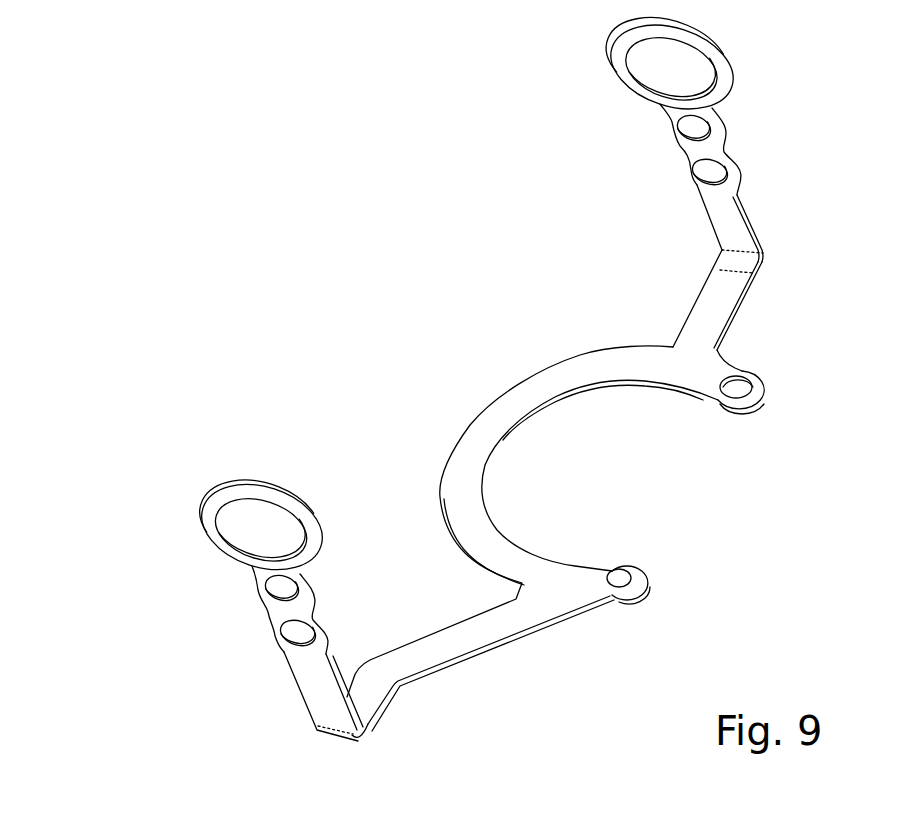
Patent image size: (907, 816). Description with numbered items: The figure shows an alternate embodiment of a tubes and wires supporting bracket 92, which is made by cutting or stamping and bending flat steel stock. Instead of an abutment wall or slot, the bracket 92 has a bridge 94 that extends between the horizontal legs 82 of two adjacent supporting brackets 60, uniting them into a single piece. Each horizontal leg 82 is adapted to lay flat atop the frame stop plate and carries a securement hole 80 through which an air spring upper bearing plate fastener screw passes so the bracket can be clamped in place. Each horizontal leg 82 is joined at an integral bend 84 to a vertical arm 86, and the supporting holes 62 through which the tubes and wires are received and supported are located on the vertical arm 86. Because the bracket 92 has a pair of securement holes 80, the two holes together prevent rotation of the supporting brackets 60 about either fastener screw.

The tubes and wires supporting bracket 60 is at (739, 129).
The supporting holes 62 is at (687, 159).
The securement holes 80 is at (759, 375).
The horizontal leg 82 is at (710, 315).
The integral bend 84 is at (722, 255).
The vertical arm 86 is at (737, 208).
The tubes and wires supporting bracket 92 is at (338, 274).
The bridge 94 is at (470, 450).